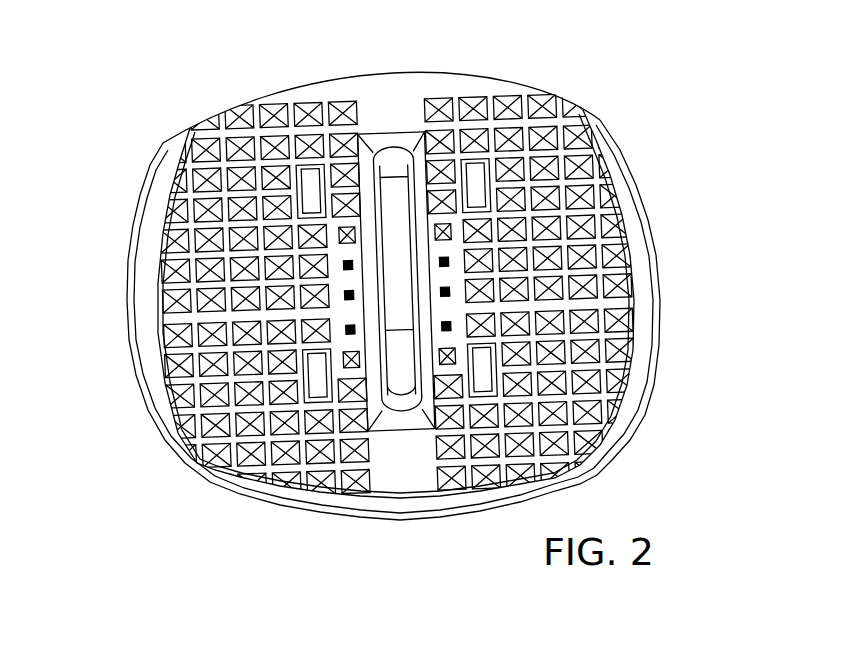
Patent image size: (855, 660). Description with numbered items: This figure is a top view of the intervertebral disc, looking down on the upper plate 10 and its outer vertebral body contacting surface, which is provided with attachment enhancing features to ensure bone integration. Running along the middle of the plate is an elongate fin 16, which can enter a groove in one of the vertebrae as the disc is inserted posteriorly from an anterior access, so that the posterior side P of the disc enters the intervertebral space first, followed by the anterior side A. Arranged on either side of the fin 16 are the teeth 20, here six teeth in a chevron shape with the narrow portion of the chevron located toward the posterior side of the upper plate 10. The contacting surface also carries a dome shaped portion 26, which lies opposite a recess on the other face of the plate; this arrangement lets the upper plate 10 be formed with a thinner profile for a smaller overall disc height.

The upper plate 10 is at (643, 290).
The fin 16 is at (400, 205).
The teeth 20 is at (305, 162).
The dome shaped portion 26 is at (527, 242).
The posterior side P is at (383, 65).
The anterior side A is at (448, 525).